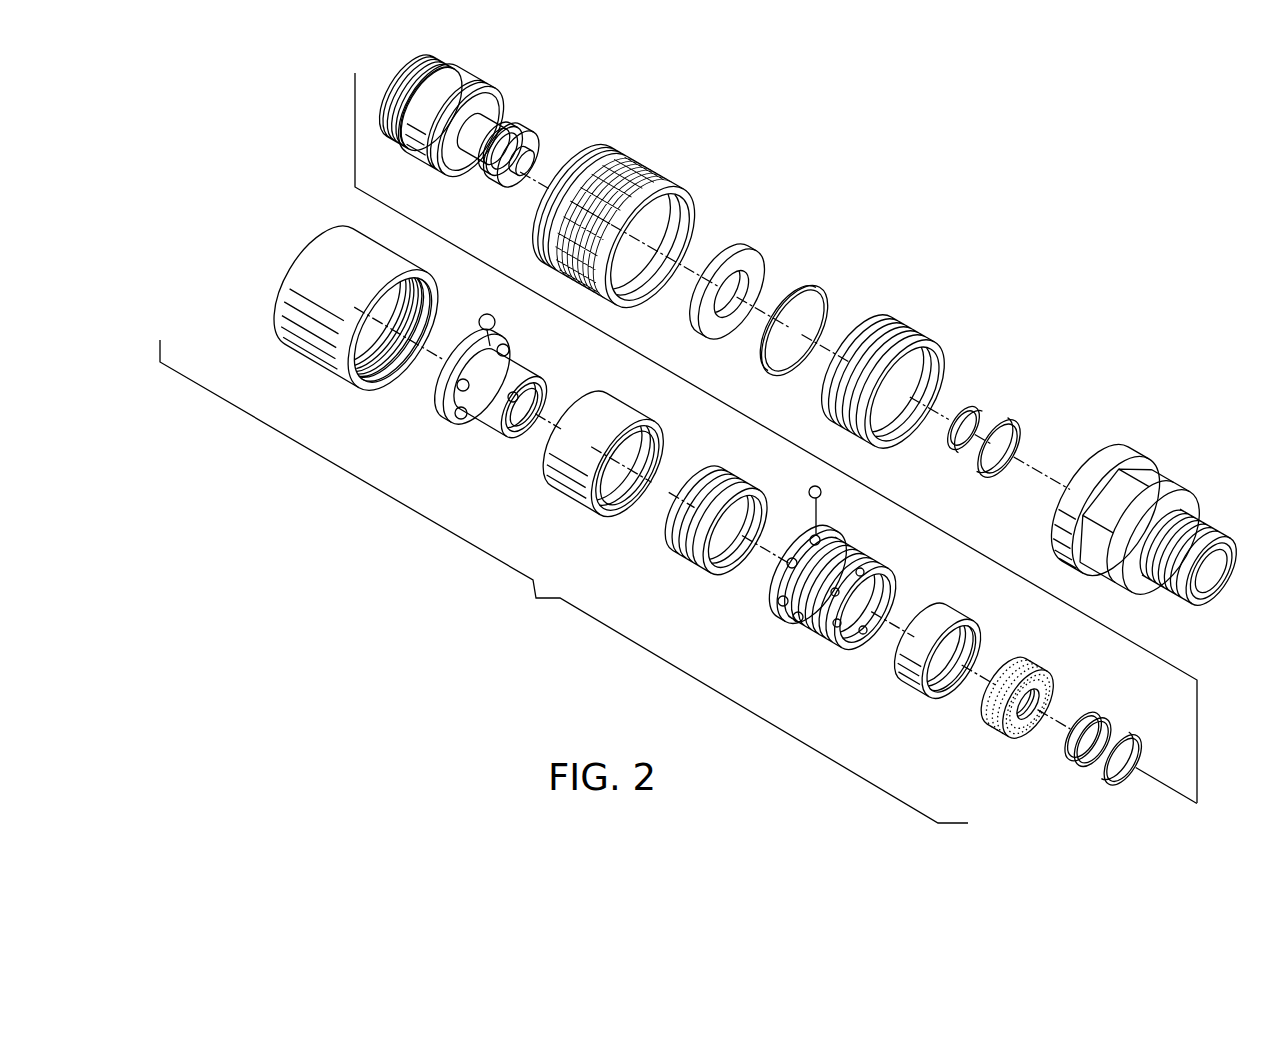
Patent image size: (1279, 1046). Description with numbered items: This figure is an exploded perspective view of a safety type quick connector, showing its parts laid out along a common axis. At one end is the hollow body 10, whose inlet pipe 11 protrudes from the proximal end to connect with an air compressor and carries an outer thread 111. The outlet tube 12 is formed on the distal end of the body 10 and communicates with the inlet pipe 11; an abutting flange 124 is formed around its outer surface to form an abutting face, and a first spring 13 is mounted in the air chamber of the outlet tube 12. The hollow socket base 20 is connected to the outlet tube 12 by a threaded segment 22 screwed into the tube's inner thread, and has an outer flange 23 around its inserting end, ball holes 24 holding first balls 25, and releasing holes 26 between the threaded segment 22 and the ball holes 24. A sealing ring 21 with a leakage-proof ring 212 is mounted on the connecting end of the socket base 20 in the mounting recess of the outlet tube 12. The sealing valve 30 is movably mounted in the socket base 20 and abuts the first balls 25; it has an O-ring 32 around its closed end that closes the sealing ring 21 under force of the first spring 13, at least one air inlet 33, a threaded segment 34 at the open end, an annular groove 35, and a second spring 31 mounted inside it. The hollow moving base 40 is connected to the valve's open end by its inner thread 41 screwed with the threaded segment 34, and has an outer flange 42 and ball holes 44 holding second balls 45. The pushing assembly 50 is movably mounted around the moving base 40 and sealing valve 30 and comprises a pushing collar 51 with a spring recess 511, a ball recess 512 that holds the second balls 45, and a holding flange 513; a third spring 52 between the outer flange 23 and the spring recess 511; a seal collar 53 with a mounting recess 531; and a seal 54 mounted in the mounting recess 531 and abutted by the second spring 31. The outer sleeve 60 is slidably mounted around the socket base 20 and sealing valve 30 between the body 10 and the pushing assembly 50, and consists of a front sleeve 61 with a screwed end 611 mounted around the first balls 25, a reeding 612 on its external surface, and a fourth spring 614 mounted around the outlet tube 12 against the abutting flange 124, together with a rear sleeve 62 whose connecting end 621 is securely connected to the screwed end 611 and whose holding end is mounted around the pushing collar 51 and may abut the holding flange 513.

The body 10 is at (1125, 502).
The inlet pipe 11 is at (1204, 543).
The outer thread 111 is at (1212, 546).
The outlet tube 12 is at (1093, 504).
The abutting flange 124 is at (1062, 506).
The first spring 13 is at (1012, 422).
The socket base 20 is at (832, 586).
The sealing ring 21 is at (763, 292).
The leakage-proof ring 212 is at (821, 292).
The threaded segment 22 is at (818, 632).
The outer flange 23 is at (776, 605).
The ball holes 24 is at (822, 533).
The first balls 25 is at (815, 488).
The releasing holes 26 is at (848, 550).
The sealing valve 30 is at (450, 125).
The second spring 31 is at (1065, 759).
The O-ring 32 is at (520, 138).
The air inlet 33 is at (487, 180).
The threaded segment 34 is at (412, 72).
The annular groove 35 is at (450, 86).
The moving base 40 is at (485, 393).
The inner thread 41 is at (518, 430).
The outer flange 42 is at (437, 407).
The ball holes 44 is at (506, 347).
The second balls 45 is at (487, 314).
The pushing assembly 50 is at (795, 560).
The pushing collar 51 is at (636, 465).
The spring recess 511 is at (619, 510).
The ball recess 512 is at (571, 474).
The holding flange 513 is at (663, 418).
The third spring 52 is at (680, 554).
The seal collar 53 is at (937, 653).
The mounting recess 531 is at (949, 685).
The seal 54 is at (1020, 670).
The outer sleeve 60 is at (737, 246).
The front sleeve 61 is at (613, 207).
The screwed end 611 is at (592, 156).
The reeding 612 is at (656, 184).
The fourth spring 614 is at (908, 332).
The rear sleeve 62 is at (356, 329).
The connecting end 621 is at (376, 374).